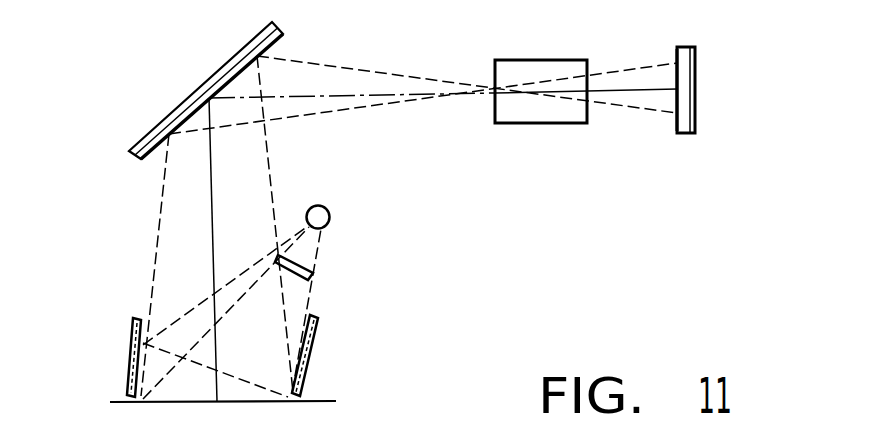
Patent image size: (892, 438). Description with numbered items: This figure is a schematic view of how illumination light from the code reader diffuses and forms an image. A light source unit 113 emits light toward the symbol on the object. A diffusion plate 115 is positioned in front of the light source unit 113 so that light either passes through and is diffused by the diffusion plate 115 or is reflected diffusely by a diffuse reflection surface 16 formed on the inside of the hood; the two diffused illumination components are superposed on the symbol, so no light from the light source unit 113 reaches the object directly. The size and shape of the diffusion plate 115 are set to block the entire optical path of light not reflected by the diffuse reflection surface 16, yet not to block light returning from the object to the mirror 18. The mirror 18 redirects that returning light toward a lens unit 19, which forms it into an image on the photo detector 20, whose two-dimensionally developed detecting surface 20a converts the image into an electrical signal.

The diffuse reflection surface 16 is at (132, 343).
The reflector (mirror) 18 is at (197, 97).
The lens unit 19 is at (540, 125).
The photo detector 20 is at (686, 135).
The detecting surface 20a is at (676, 50).
The light source unit 113 is at (330, 211).
The diffusion plate 115 is at (313, 274).